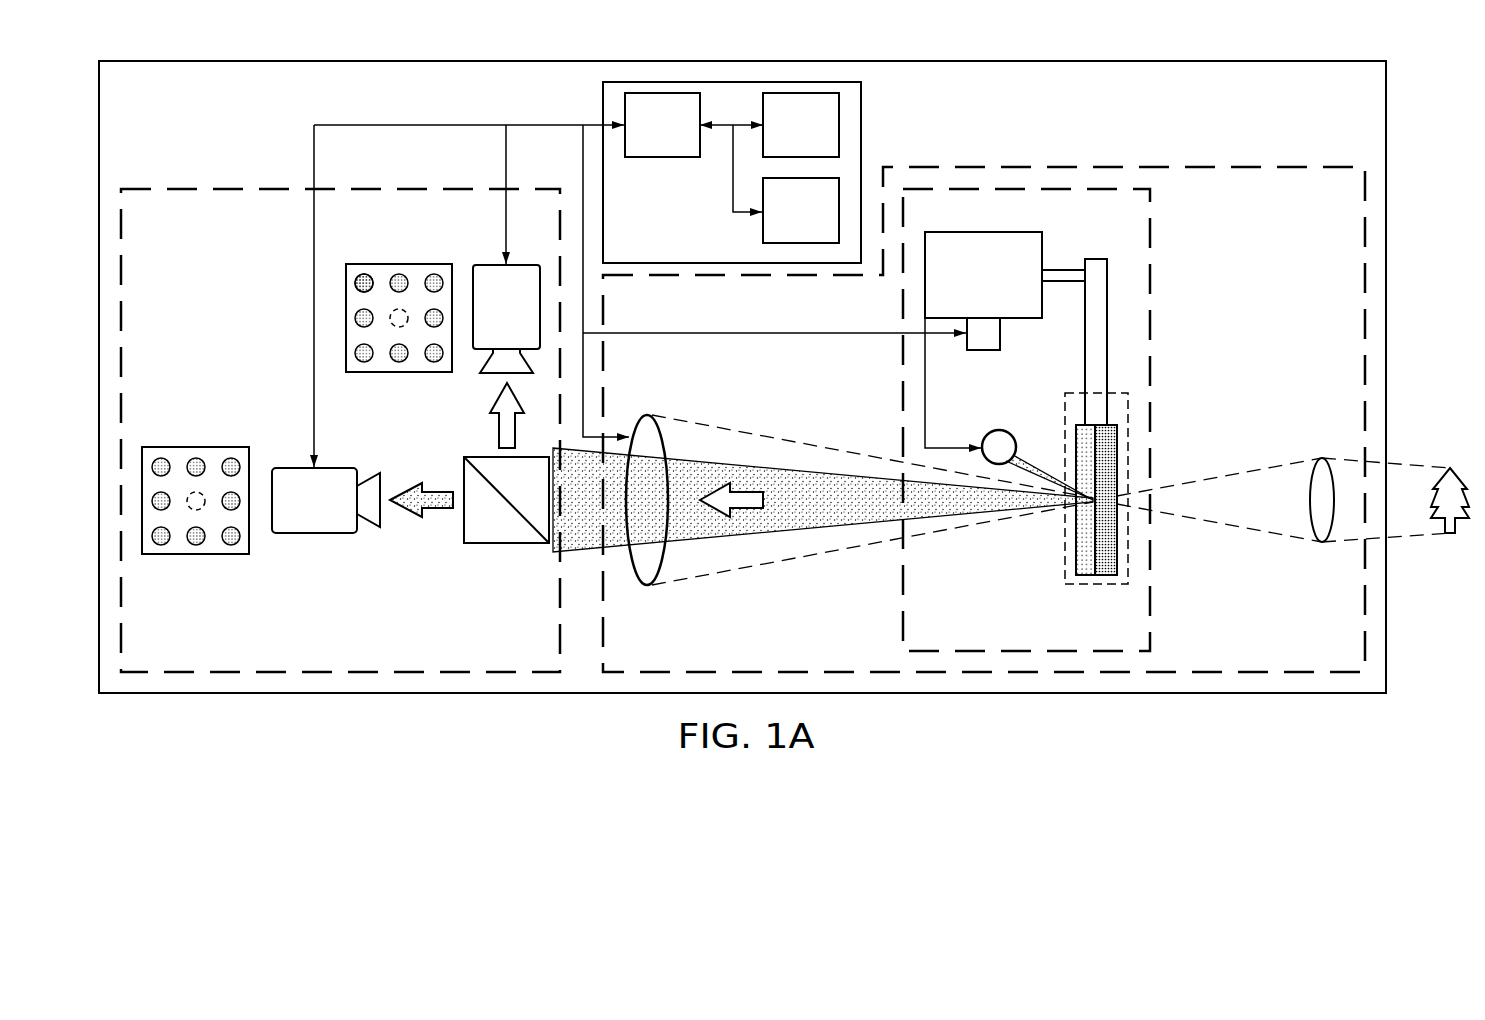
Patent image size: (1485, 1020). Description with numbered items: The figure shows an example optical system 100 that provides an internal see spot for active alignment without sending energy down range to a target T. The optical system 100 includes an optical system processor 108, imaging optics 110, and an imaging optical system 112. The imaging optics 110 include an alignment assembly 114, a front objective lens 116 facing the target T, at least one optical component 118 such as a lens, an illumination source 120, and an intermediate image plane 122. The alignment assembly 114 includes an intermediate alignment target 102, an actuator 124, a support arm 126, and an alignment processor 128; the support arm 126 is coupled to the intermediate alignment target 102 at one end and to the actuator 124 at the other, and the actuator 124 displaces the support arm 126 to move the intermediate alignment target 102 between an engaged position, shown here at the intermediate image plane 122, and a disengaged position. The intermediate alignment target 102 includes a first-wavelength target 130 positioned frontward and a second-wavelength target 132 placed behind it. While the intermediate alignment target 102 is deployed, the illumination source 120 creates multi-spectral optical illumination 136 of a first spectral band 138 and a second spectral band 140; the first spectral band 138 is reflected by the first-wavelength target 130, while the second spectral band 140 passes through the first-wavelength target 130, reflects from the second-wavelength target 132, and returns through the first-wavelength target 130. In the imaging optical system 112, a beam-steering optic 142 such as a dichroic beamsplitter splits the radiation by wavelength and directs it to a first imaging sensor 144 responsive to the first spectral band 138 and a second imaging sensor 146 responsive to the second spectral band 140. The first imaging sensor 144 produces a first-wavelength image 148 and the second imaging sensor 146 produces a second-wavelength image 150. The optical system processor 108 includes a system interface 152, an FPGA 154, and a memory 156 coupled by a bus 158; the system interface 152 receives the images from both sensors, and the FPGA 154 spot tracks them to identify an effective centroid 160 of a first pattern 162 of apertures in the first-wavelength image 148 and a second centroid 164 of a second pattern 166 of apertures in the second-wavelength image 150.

The optical system 100 is at (947, 60).
The intermediate alignment target 102 is at (1113, 419).
The optical system processor 108 is at (862, 133).
The imaging optics 110 is at (1200, 165).
The imaging optical system 112 is at (238, 187).
The alignment assembly 114 is at (1152, 343).
The front objective lens 116 is at (1323, 545).
The optical component 118 is at (647, 586).
The illumination source 120 is at (990, 432).
The intermediate image plane 122 is at (1130, 533).
The actuator 124 is at (965, 287).
The support arm 126 is at (1097, 259).
The alignment processor 128 is at (1001, 340).
The first-wavelength target 130 is at (1084, 568).
The second-wavelength target 132 is at (1107, 568).
The optical illumination 136 is at (1027, 452).
The first spectral band 138 is at (437, 510).
The second spectral band 140 is at (496, 430).
The beam-steering optic 142 is at (505, 543).
The first imaging sensor 144 is at (301, 533).
The second imaging sensor 146 is at (490, 265).
The first-wavelength image 148 is at (183, 444).
The second-wavelength image 150 is at (387, 374).
The system interface 152 is at (681, 139).
The FPGA 154 is at (783, 139).
The memory 156 is at (783, 224).
The bus 158 is at (733, 173).
The effective centroid 160 is at (191, 509).
The first pattern 162 is at (220, 545).
The second centroid 164 is at (407, 310).
The second pattern 166 is at (377, 272).
The target T is at (1452, 542).